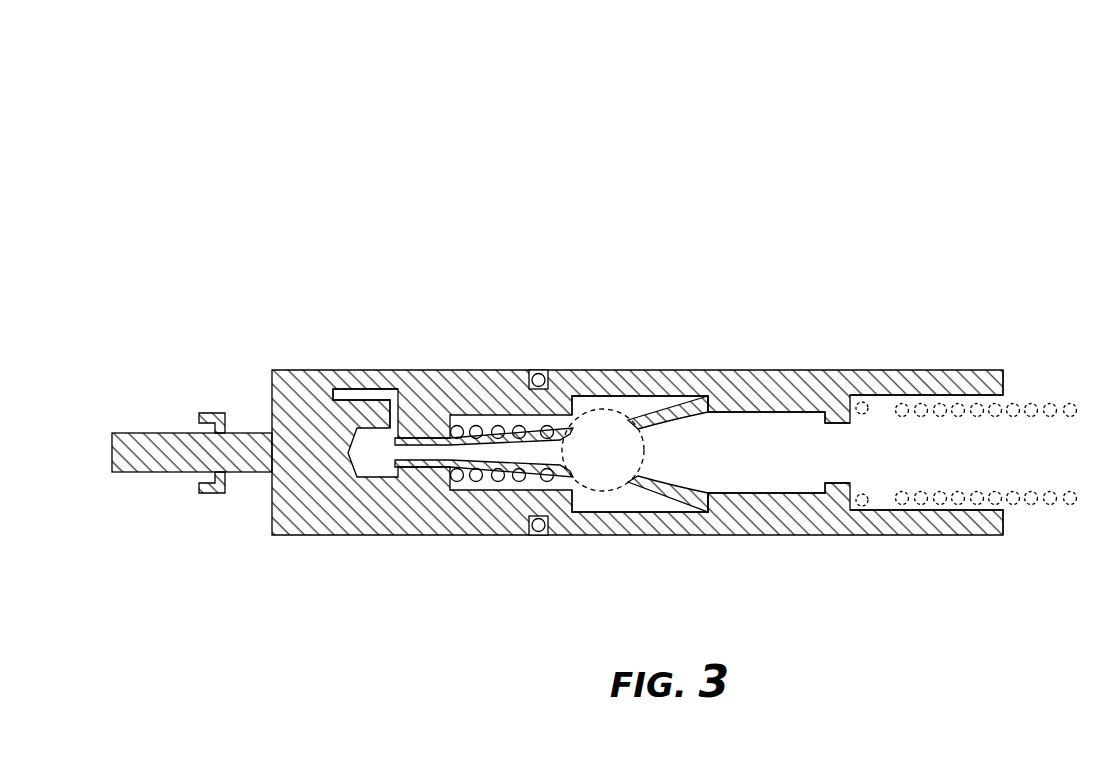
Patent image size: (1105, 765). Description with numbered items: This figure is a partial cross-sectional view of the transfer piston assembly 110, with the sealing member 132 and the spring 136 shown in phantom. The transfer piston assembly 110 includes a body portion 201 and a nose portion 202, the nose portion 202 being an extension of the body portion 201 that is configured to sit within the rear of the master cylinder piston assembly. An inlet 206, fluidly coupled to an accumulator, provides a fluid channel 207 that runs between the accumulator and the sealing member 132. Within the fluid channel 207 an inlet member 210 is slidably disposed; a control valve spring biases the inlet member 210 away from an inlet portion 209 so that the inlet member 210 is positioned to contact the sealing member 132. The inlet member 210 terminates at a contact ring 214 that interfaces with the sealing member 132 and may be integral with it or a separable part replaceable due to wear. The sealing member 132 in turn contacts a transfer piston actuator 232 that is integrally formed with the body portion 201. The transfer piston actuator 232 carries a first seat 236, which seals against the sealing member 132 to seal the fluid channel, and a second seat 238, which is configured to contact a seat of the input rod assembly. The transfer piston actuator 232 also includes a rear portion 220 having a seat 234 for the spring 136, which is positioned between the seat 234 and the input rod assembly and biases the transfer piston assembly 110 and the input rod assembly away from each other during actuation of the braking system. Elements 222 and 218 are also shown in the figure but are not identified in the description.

The transfer piston assembly 110 is at (201, 56).
The body portion 201 is at (475, 370).
The nose portion 202 is at (125, 433).
The collar 222 is at (212, 413).
The inlet 206 is at (357, 395).
The fluid channel 207 is at (420, 458).
The inlet portion 209 is at (476, 462).
The inlet member 210 is at (486, 470).
The O-ring seal 218 is at (538, 536).
The contact ring 214 is at (593, 420).
The sealing member 132 is at (627, 413).
The first seat 236 is at (628, 478).
The second seat 238 is at (708, 414).
The transfer piston actuator 232 is at (803, 412).
The rear portion 220 is at (958, 371).
The seat 234 is at (852, 418).
The spring 136 is at (1070, 506).